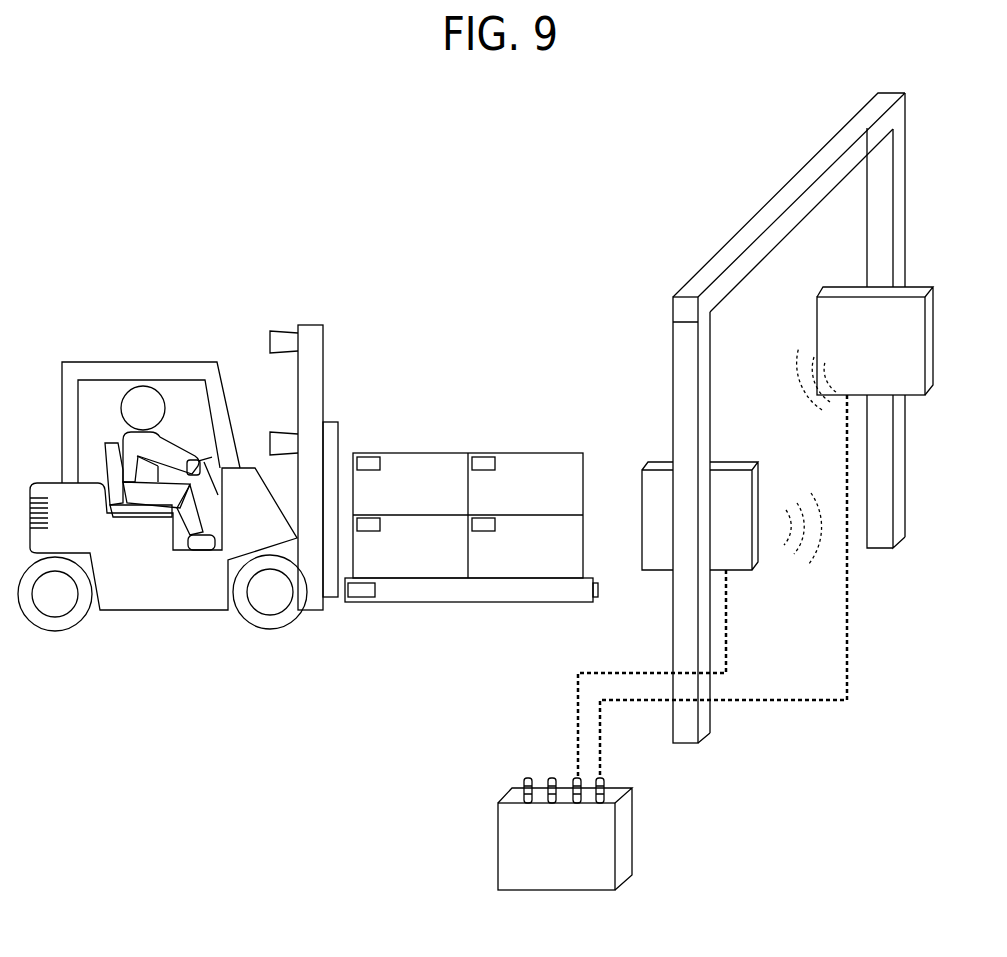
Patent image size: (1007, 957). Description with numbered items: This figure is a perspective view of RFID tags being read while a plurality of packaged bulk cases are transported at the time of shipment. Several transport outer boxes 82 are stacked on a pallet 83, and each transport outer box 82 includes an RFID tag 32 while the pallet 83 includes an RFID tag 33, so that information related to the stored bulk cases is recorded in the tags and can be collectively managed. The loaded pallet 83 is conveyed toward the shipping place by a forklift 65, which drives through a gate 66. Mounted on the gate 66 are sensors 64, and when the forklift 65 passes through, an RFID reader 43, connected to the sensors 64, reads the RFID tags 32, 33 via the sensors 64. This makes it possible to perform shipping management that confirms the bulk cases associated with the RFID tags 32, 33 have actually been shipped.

The RFID tag 32 is at (363, 455).
The RFID tag 33 is at (357, 593).
The RFID reader 43 is at (507, 847).
The sensor 64 is at (843, 307).
The forklift 65 is at (157, 597).
The gate 66 is at (680, 340).
The transport outer box 82 is at (422, 463).
The pallet 83 is at (455, 592).